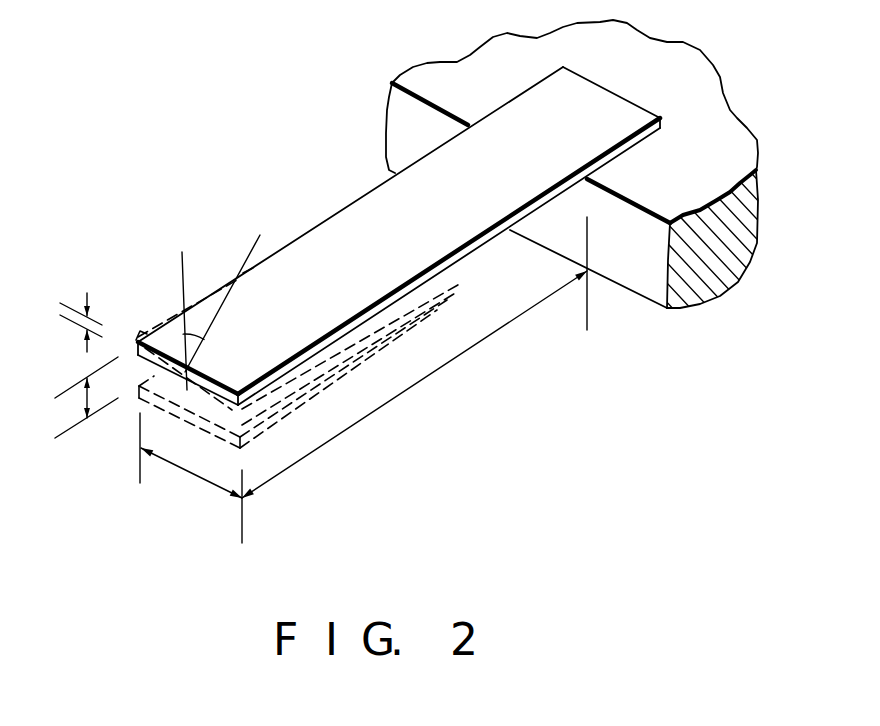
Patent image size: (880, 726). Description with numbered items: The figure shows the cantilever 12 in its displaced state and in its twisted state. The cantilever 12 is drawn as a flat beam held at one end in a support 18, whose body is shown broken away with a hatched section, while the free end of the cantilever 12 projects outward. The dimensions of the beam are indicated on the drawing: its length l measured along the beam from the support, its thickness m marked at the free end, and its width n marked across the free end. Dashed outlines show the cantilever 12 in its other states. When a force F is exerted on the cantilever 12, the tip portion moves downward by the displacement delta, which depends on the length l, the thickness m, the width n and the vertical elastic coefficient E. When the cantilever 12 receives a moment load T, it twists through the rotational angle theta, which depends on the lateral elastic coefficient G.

The cantilever 12 is at (320, 224).
The support block 18 is at (726, 118).
The rotational angle theta is at (221, 312).
The length of the cantilever l is at (414, 380).
The width of the cantilever n is at (191, 459).
The thickness of the cantilever m is at (67, 321).
The displacement delta is at (85, 397).